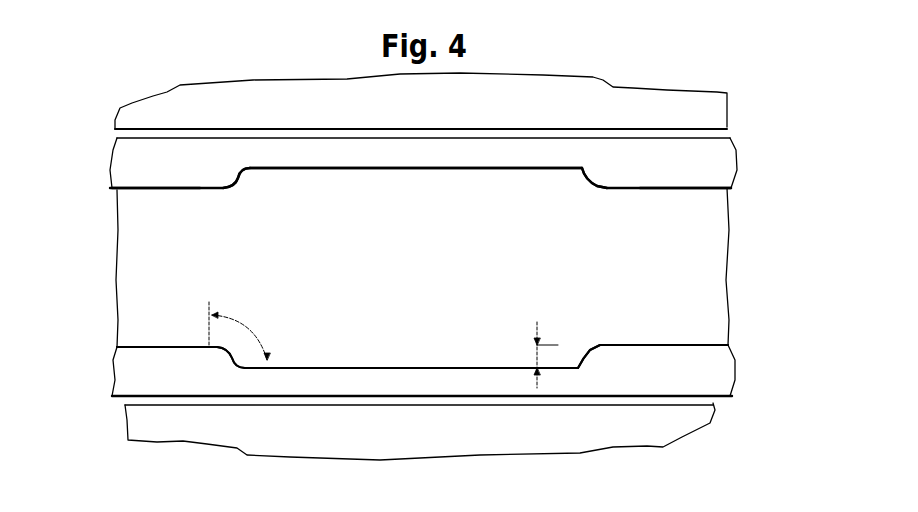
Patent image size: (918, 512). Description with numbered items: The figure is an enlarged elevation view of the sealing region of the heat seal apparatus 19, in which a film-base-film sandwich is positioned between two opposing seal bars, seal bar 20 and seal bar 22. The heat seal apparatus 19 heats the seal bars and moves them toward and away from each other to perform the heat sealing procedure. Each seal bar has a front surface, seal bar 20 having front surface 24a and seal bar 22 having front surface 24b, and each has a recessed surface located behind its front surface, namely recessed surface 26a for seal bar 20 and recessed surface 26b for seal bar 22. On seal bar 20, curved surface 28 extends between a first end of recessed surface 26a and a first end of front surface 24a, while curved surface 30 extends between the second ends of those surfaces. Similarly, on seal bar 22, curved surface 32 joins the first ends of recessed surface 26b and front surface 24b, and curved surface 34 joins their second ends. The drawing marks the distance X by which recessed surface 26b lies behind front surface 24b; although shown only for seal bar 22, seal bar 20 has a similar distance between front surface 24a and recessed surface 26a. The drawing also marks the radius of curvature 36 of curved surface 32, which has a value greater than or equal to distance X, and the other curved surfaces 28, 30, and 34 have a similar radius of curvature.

The heat seal apparatus 19 is at (672, 103).
The seal bar 20 is at (730, 156).
The seal bar 22 is at (727, 370).
The front surface 24a is at (155, 192).
The front surface 24b is at (138, 348).
The recessed surface 26a is at (348, 173).
The recessed surface 26b is at (397, 368).
The curved surface 28 is at (233, 184).
The curved surface 30 is at (585, 177).
The curved surface 32 is at (220, 357).
The curved surface 34 is at (598, 350).
The radius of curvature 36 is at (262, 350).
The distance X is at (537, 352).